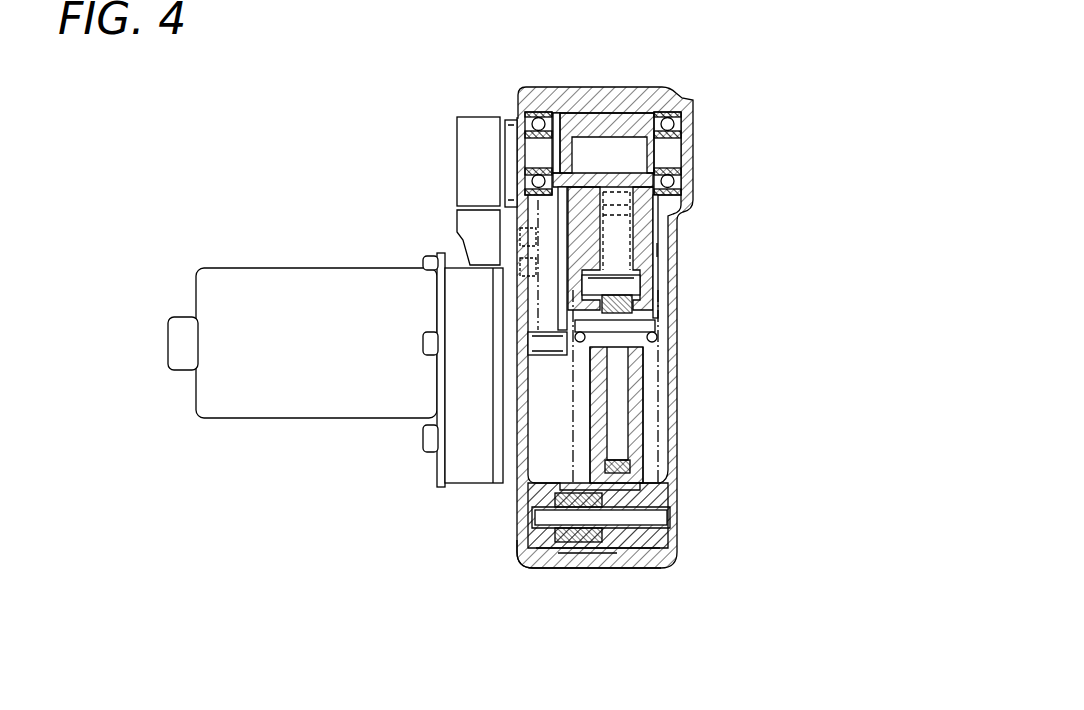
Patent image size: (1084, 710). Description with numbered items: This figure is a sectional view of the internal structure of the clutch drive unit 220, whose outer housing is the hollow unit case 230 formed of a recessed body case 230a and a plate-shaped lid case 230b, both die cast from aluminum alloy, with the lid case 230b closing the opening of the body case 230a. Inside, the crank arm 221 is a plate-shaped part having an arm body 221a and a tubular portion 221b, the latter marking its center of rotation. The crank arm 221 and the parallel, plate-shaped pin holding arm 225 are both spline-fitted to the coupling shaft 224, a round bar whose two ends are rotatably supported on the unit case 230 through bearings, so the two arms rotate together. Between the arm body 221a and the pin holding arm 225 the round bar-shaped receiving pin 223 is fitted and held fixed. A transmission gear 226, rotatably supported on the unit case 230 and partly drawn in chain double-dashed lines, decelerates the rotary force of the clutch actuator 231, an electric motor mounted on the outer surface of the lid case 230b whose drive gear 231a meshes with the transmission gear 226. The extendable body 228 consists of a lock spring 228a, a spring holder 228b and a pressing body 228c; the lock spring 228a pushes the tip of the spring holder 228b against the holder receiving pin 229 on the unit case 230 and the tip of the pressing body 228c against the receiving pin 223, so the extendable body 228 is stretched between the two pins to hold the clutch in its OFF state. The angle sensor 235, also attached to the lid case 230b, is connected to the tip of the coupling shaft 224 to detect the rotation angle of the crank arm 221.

The clutch drive unit 220 is at (309, 74).
The crank arm 221 is at (585, 115).
The arm body 221a is at (653, 213).
The tubular portion 221b is at (577, 113).
The receiving pin 223 is at (640, 266).
The coupling shaft 224 is at (655, 91).
The pin holding arm 225 is at (658, 248).
The transmission gear 226 is at (580, 236).
The extendable body 228 is at (790, 345).
The lock spring 228a is at (660, 385).
The spring holder 228b is at (643, 414).
The pressing body 228c is at (655, 322).
The holder receiving pin 229 is at (615, 550).
The unit case 230 is at (500, 647).
The body case 230a is at (578, 570).
The lid case 230b is at (527, 570).
The clutch actuator 231 is at (232, 420).
The drive gear 231a is at (553, 362).
The angle sensor 235 is at (472, 117).